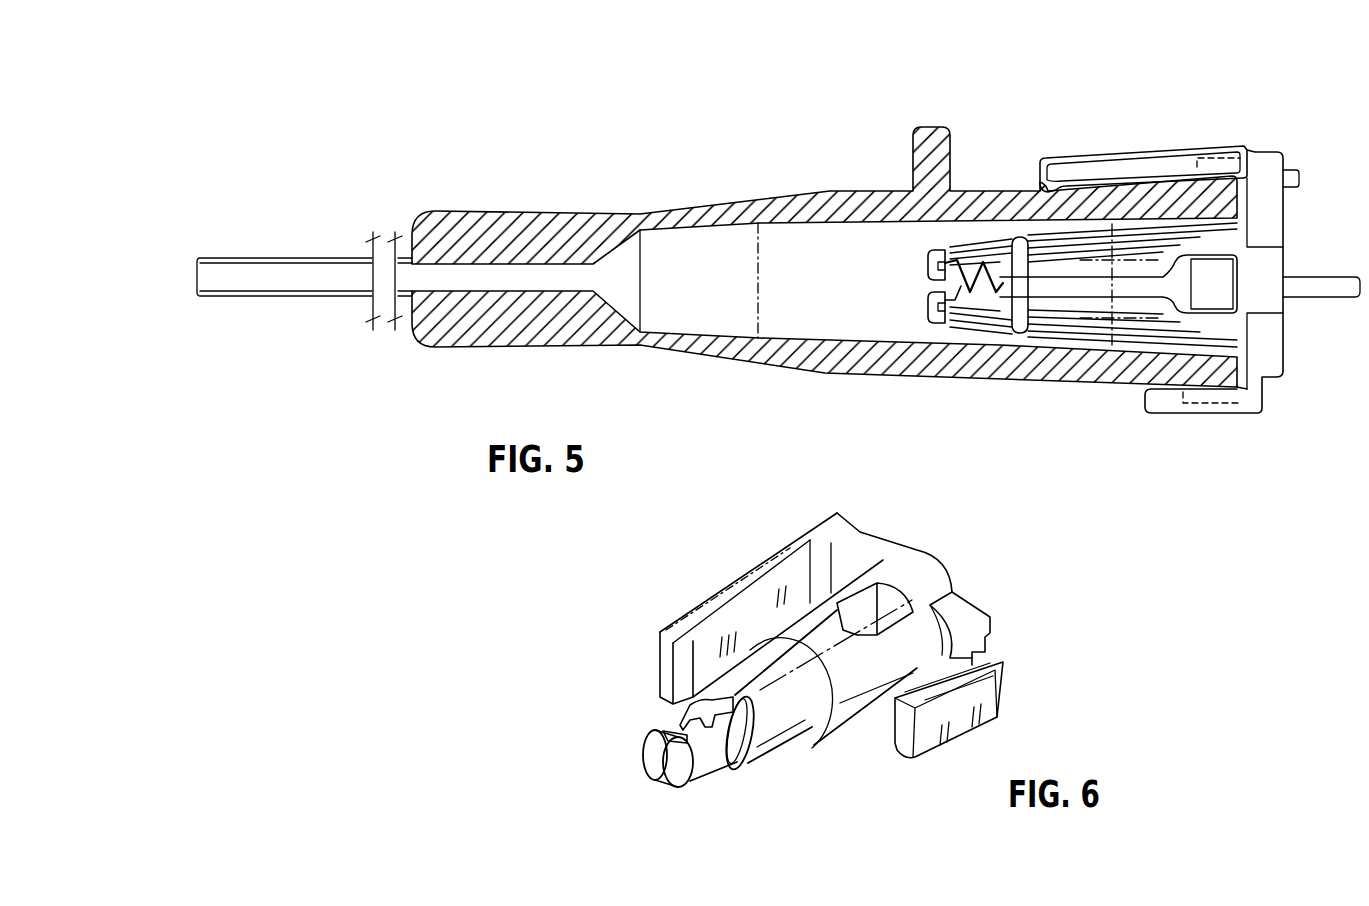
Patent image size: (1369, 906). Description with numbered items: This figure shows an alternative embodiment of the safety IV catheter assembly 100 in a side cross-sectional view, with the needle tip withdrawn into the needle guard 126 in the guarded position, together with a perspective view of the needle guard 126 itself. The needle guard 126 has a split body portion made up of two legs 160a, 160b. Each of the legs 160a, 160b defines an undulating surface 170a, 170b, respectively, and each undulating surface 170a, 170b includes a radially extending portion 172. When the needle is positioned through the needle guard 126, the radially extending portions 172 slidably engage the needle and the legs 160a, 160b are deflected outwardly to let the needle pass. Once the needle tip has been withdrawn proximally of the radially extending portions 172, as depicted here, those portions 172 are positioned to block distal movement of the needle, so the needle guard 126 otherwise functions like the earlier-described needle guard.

In FIG. 5, the safety IV catheter assembly 100 is at (1066, 84).
In FIG. 5, the needle guard 126 is at (1087, 345).
In FIG. 6, the needle guard 126 is at (707, 537).
In FIG. 5, the leg 160a is at (1092, 235).
In FIG. 6, the leg 160a is at (803, 628).
In FIG. 5, the leg 160b is at (1057, 333).
In FIG. 6, the leg 160b is at (826, 735).
In FIG. 5, the undulating surface 170a is at (990, 250).
In FIG. 6, the undulating surface 170a is at (686, 722).
In FIG. 5, the undulating surface 170b is at (955, 326).
In FIG. 6, the undulating surface 170b is at (720, 752).
In FIG. 5, the radially extending portion 172 is at (935, 262).
In FIG. 6, the radially extending portion 172 is at (680, 722).